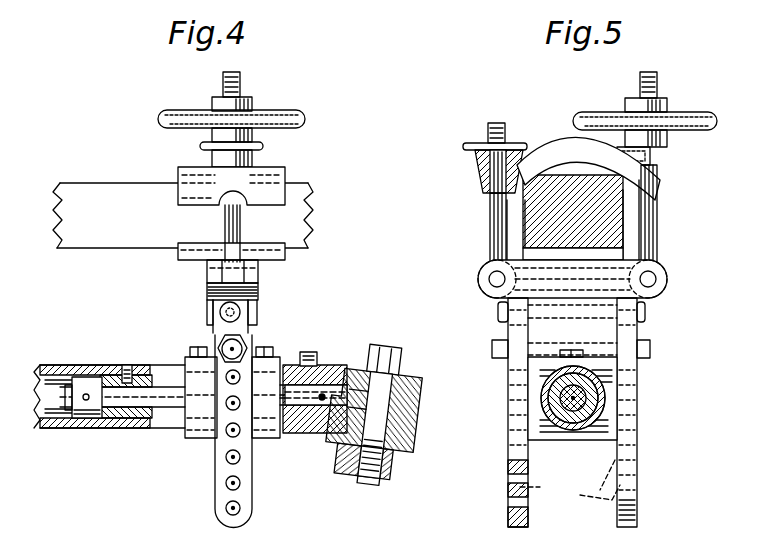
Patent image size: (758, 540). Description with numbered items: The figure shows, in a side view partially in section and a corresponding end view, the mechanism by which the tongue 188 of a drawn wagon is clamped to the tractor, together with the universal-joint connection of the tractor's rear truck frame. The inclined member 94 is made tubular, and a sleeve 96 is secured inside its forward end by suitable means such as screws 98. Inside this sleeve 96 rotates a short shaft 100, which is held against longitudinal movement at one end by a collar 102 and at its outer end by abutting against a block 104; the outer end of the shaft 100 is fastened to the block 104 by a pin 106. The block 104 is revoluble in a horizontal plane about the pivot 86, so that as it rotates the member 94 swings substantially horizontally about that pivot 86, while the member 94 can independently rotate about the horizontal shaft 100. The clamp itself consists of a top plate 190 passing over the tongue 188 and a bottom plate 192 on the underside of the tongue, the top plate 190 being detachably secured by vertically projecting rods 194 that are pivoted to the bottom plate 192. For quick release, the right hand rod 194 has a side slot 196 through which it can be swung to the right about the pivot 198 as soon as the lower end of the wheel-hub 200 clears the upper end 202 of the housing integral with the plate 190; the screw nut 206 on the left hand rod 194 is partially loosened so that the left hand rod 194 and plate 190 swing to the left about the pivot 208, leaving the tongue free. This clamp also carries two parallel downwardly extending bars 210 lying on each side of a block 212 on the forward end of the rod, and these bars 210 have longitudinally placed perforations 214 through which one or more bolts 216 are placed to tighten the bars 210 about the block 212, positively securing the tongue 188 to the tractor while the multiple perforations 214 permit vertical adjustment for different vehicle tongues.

In FIG. 4, the pivot 86 is at (380, 420).
In FIG. 4, the inclined member 94 is at (44, 430).
In FIG. 5, the inclined member 94 is at (541, 392).
In FIG. 4, the sleeve 96 is at (118, 375).
In FIG. 5, the sleeve 96 is at (590, 393).
In FIG. 4, the screws 98 is at (130, 366).
In FIG. 4, the short shaft 100 is at (132, 408).
In FIG. 5, the short shaft 100 is at (572, 408).
In FIG. 4, the collar 102 is at (86, 420).
In FIG. 4, the block 104 is at (312, 435).
In FIG. 4, the pin 106 is at (318, 358).
In FIG. 4, the tongue 188 is at (72, 243).
In FIG. 5, the tongue 188 is at (600, 210).
In FIG. 4, the top plate 190 is at (283, 167).
In FIG. 5, the top plate 190 is at (548, 172).
In FIG. 4, the bottom plate 192 is at (280, 262).
In FIG. 5, the bottom plate 192 is at (530, 252).
In FIG. 4, the rod 194 is at (226, 224).
In FIG. 5, the rod 194 is at (492, 225).
In FIG. 5, the side slot 196 is at (666, 166).
In FIG. 5, the pivot 198 is at (650, 280).
In FIG. 5, the wheel-hub 200 is at (670, 110).
In FIG. 5, the upper end of housing 202 is at (612, 160).
In FIG. 4, the screw nut 206 is at (200, 146).
In FIG. 5, the screw nut 206 is at (472, 143).
In FIG. 4, the pivot 208 is at (208, 280).
In FIG. 5, the pivot 208 is at (497, 279).
In FIG. 4, the downwardly extending bars 210 is at (226, 431).
In FIG. 5, the downwardly extending bars 210 is at (508, 430).
In FIG. 4, the block 212 is at (202, 440).
In FIG. 5, the block 212 is at (605, 430).
In FIG. 4, the perforations 214 is at (226, 508).
In FIG. 5, the perforations 214 is at (528, 490).
In FIG. 4, the bolts 216 is at (222, 350).
In FIG. 5, the bolts 216 is at (650, 350).